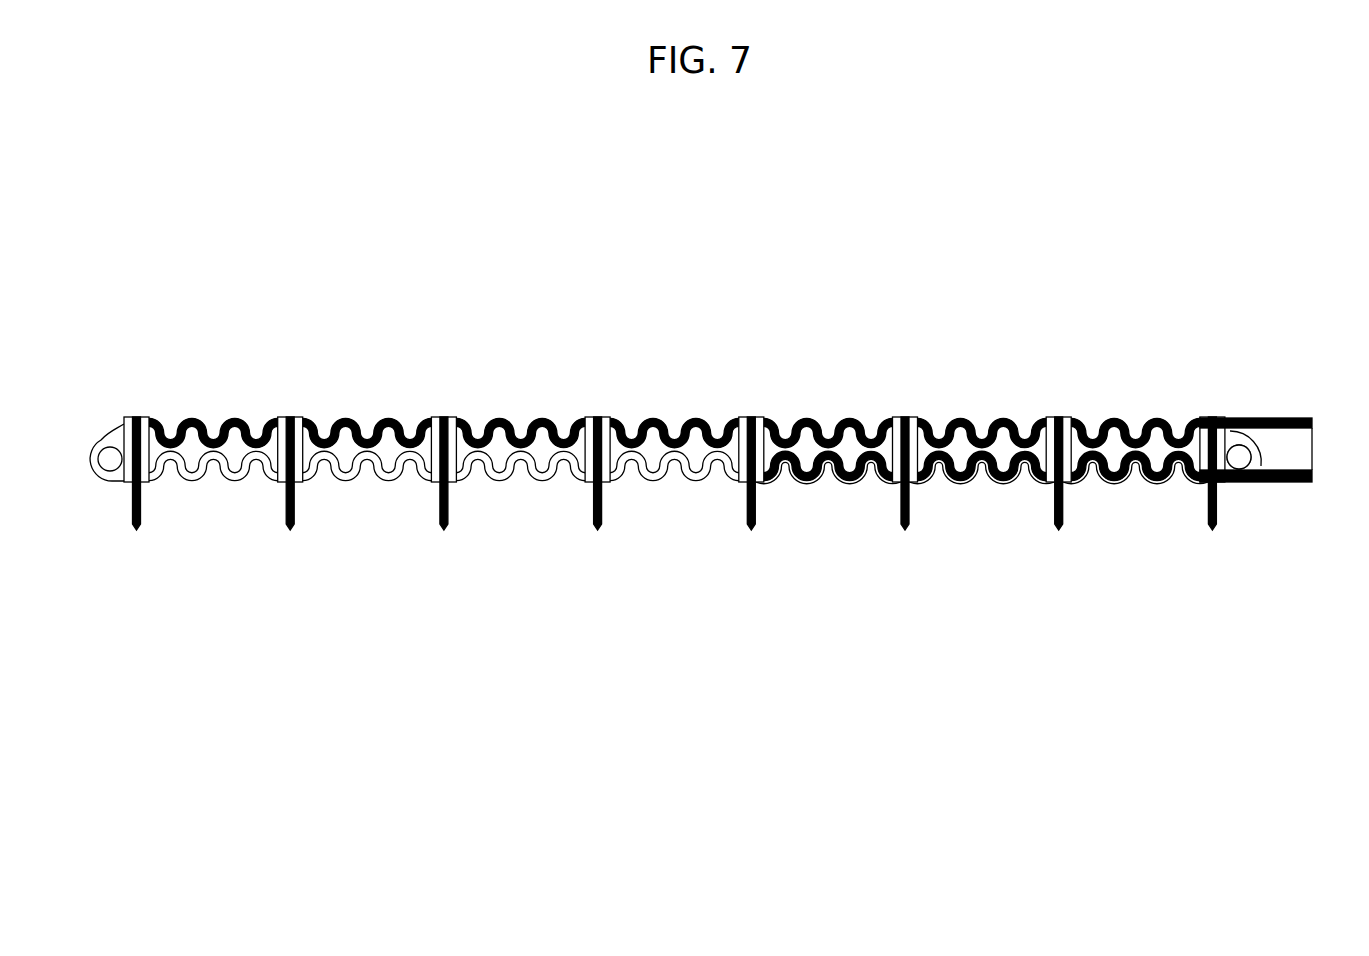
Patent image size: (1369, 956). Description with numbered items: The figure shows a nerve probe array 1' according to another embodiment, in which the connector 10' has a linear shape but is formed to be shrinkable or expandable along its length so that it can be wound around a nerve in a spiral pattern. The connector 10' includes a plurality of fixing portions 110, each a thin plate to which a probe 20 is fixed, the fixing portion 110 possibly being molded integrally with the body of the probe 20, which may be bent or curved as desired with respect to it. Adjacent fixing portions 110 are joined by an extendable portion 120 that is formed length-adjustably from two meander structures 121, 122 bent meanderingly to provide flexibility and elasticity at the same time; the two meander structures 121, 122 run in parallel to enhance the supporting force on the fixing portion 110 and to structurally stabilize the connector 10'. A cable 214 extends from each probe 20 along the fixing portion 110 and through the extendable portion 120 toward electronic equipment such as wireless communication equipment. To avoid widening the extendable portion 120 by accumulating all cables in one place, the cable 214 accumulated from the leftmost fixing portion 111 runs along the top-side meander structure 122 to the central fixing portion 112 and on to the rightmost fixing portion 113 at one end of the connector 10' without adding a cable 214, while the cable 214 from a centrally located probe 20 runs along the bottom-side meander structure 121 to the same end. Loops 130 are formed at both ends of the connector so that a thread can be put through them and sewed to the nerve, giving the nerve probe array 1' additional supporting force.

The nerve probe array 1' is at (701, 421).
The connector 10' is at (982, 465).
The probe 20 is at (1205, 513).
The fixing portion 110 is at (287, 417).
The leftmost fixing portion 111 is at (125, 417).
The central fixing portion 112 is at (913, 417).
The rightmost fixing portion 113 is at (1207, 418).
The extendable portion 120 is at (1010, 483).
The meander structure 121 is at (960, 483).
The meander structure 122 is at (968, 417).
The loop 130 is at (110, 465).
The cable 214 is at (192, 417).